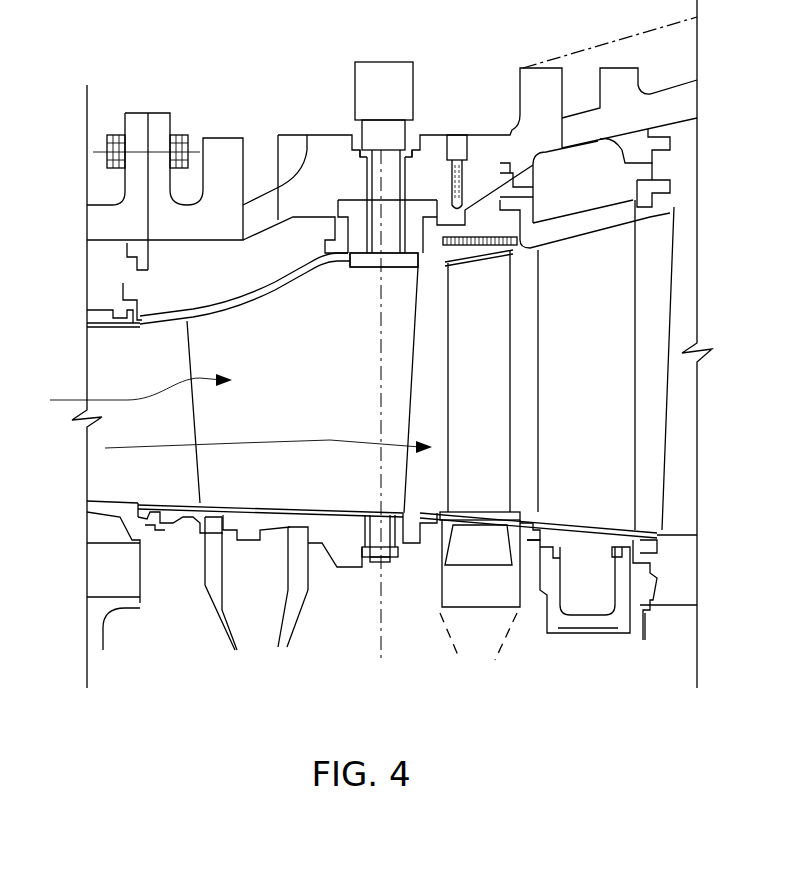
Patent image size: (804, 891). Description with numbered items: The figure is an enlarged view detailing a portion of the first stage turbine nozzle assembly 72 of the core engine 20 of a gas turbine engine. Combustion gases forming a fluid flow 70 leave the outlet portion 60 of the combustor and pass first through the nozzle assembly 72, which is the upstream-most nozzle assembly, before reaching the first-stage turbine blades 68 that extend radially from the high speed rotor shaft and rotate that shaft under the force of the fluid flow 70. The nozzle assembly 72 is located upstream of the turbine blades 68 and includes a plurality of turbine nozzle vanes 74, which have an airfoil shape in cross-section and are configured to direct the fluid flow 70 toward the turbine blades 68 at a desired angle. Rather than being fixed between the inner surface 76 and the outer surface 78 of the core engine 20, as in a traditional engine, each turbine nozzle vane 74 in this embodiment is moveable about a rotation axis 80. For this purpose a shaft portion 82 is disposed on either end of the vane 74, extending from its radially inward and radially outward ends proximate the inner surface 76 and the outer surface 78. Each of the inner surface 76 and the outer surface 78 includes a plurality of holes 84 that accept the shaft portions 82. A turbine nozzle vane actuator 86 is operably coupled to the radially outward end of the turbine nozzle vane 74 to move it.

The core engine 20 is at (330, 128).
The outlet portion 60 is at (106, 328).
The turbine blades 68 is at (510, 305).
The fluid flow 70 is at (116, 449).
The first stage turbine nozzle assembly 72 is at (125, 393).
The turbine nozzle vanes 74 is at (403, 483).
The inner surface 76 is at (166, 530).
The outer surface 78 is at (202, 298).
The rotation axis 80 is at (380, 645).
The shaft portion 82 is at (370, 163).
The holes 84 is at (405, 173).
The turbine nozzle vane actuator 86 is at (388, 62).